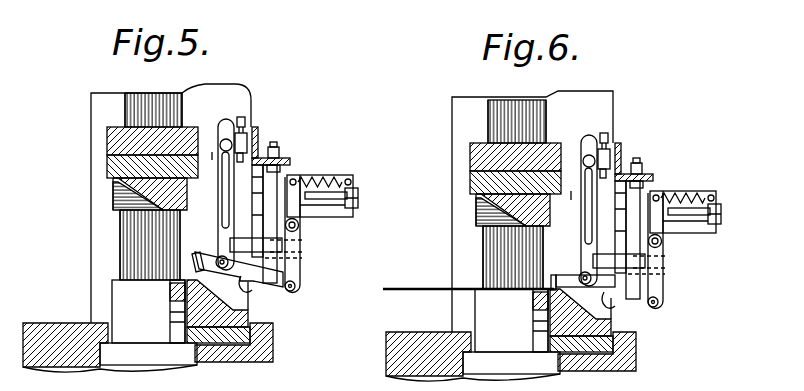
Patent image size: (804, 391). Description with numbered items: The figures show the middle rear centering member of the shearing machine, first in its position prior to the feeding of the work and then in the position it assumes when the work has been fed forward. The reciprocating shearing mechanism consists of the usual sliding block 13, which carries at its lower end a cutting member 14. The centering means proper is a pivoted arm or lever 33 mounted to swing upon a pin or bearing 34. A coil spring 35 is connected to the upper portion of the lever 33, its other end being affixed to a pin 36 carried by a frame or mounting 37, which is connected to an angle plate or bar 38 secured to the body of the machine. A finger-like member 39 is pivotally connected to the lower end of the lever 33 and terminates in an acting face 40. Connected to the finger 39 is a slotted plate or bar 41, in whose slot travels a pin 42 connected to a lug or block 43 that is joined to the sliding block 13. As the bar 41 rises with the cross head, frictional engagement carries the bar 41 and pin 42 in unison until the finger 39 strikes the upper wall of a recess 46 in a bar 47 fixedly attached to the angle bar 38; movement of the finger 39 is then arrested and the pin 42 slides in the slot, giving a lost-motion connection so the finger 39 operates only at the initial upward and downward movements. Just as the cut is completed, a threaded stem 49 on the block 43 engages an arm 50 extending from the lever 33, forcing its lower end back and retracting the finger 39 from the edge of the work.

In FIG. 5, the sliding block 13 is at (107, 143).
In FIG. 6, the sliding block 13 is at (486, 162).
In FIG. 5, the cutting member 14 is at (118, 181).
In FIG. 6, the cutting member 14 is at (480, 209).
In FIG. 5, the pivoted arm or lever 33 is at (301, 268).
In FIG. 6, the pivoted arm or lever 33 is at (678, 251).
In FIG. 5, the pin or bearing 34 is at (299, 224).
In FIG. 6, the pin or bearing 34 is at (675, 236).
In FIG. 5, the coil spring 35 is at (345, 178).
In FIG. 6, the coil spring 35 is at (715, 181).
In FIG. 5, the pin 36 is at (358, 182).
In FIG. 6, the pin 36 is at (710, 198).
In FIG. 5, the frame or mounting 37 is at (308, 168).
In FIG. 6, the frame or mounting 37 is at (686, 190).
In FIG. 5, the angle plate or bar 38 is at (258, 132).
In FIG. 6, the angle plate or bar 38 is at (638, 153).
In FIG. 5, the finger-like member 39 is at (252, 292).
In FIG. 6, the finger-like member 39 is at (650, 307).
In FIG. 5, the acting face 40 is at (198, 273).
In FIG. 6, the acting face 40 is at (585, 292).
In FIG. 5, the slotted plate or bar 41 is at (233, 118).
In FIG. 6, the slotted plate or bar 41 is at (602, 139).
In FIG. 5, the pin 42 is at (222, 138).
In FIG. 6, the pin 42 is at (572, 197).
In FIG. 5, the lug or block 43 is at (262, 130).
In FIG. 6, the lug or block 43 is at (610, 192).
In FIG. 5, the recess 46 is at (303, 253).
In FIG. 6, the recess 46 is at (668, 277).
In FIG. 5, the bar 47 is at (282, 175).
In FIG. 6, the bar 47 is at (660, 221).
In FIG. 5, the threaded stem 49 is at (243, 122).
In FIG. 6, the threaded stem 49 is at (626, 115).
In FIG. 5, the arm 50 is at (220, 229).
In FIG. 6, the arm 50 is at (621, 295).